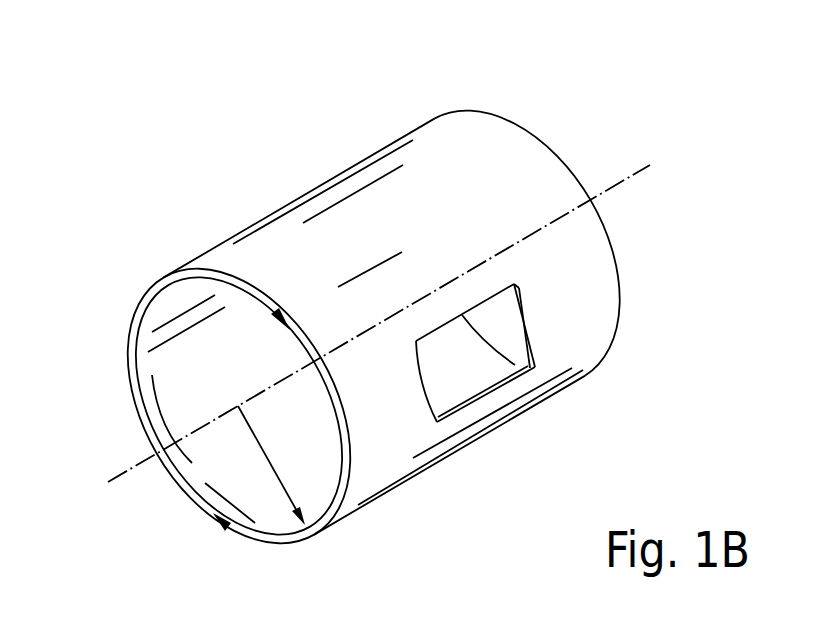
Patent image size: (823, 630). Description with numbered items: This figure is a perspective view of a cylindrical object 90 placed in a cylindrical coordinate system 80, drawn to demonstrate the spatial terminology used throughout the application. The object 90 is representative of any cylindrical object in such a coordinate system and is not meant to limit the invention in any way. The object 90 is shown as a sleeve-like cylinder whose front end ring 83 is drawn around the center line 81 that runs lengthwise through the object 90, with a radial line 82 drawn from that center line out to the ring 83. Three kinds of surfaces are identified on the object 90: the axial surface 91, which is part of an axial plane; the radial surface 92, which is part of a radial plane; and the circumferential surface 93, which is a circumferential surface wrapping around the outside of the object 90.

The cylindrical coordinate system 80 is at (560, 121).
The object 90 is at (414, 106).
The circumferential surface 93 is at (350, 215).
The front rim 83 is at (138, 300).
The longitudinal axis 81 is at (120, 481).
The radial surface 92 is at (253, 533).
The radius 82 is at (278, 474).
The axial surface 91 is at (500, 378).